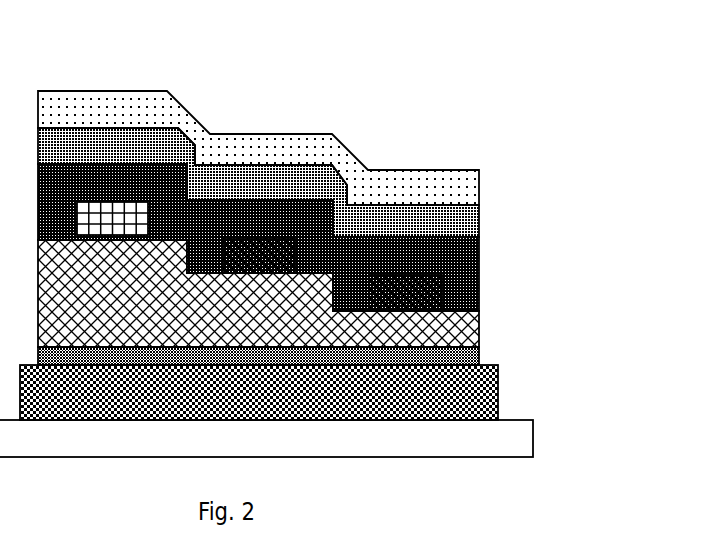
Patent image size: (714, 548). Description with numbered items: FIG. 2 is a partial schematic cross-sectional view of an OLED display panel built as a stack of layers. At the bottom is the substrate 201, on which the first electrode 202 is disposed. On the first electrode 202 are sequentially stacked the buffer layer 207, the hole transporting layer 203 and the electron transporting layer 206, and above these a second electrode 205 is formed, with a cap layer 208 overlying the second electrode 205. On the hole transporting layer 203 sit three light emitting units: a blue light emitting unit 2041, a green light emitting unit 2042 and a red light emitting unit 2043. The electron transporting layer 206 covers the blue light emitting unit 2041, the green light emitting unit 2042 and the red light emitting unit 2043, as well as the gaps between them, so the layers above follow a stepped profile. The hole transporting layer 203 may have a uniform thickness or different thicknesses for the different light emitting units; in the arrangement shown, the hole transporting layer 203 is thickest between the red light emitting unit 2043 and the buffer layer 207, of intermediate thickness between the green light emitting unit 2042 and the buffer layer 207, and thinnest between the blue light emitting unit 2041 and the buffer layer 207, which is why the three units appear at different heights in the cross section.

The substrate 201 is at (533, 445).
The first electrode 202 is at (498, 400).
The buffer layer 207 is at (479, 353).
The hole transporting layer 203 is at (479, 327).
The electron transporting layer 206 is at (479, 282).
The second electrode 205 is at (479, 227).
The cap layer 208 is at (479, 187).
The blue light emitting unit 2041 is at (400, 285).
The green light emitting unit 2042 is at (257, 255).
The red light emitting unit 2043 is at (112, 222).